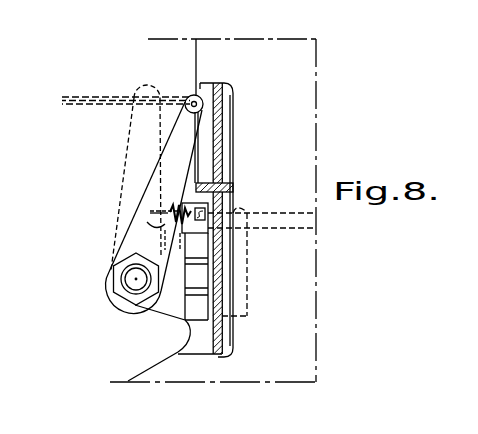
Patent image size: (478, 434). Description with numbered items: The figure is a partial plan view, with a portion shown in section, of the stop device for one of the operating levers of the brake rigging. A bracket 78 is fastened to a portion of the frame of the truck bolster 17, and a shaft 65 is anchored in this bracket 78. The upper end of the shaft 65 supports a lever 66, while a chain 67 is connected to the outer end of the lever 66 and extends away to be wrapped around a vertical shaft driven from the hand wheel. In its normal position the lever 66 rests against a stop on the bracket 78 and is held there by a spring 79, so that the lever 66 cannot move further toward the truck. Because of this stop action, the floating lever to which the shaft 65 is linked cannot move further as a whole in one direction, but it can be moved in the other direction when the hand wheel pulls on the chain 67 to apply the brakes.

The truck bolster 17 is at (223, 108).
The shaft 65 is at (134, 279).
The lever 66 is at (168, 151).
The chain 67 is at (86, 100).
The bracket 78 is at (165, 305).
The spring 79 is at (192, 214).